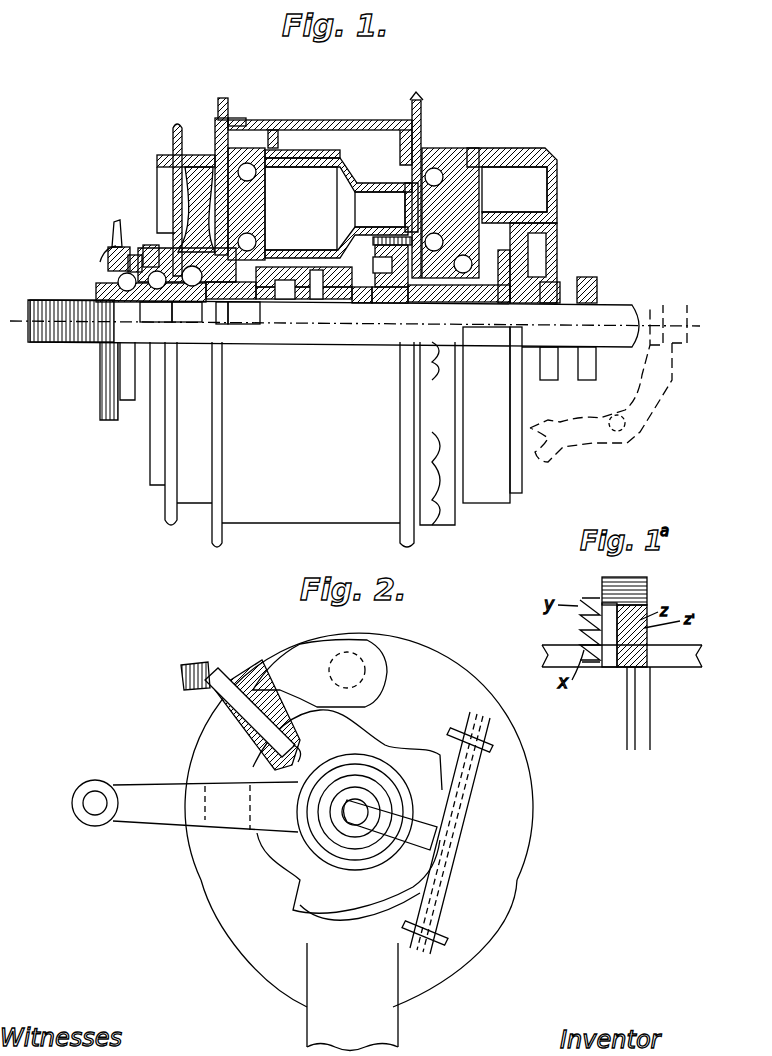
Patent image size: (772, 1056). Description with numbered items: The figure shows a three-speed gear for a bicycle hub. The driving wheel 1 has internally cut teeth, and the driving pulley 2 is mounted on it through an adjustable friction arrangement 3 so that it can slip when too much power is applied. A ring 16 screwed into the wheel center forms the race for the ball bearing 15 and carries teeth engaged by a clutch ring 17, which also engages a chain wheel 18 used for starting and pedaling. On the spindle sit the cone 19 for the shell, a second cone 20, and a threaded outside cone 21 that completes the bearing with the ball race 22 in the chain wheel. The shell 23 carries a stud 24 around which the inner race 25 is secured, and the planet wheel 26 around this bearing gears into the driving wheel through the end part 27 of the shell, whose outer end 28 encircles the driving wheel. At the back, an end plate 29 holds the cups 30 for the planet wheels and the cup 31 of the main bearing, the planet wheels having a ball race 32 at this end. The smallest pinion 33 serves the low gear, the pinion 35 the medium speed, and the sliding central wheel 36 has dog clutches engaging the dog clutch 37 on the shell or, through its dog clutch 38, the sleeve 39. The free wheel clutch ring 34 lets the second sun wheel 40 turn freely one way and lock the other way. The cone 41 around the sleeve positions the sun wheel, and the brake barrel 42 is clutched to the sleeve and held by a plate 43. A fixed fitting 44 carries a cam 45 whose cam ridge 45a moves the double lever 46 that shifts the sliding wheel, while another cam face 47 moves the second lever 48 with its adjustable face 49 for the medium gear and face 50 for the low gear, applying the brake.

In FIG. 1, the driving wheel 1 is at (236, 122).
In FIG. 1, the driving pulley 2 is at (173, 138).
In FIG. 1, the adjustable friction arrangement 3 is at (196, 175).
In FIG. 1, the ball bearing 15 is at (148, 280).
In FIG. 1, the ring forming a ball race 16 is at (108, 250).
In FIG. 1, the clutch ring 17 is at (146, 246).
In FIG. 1, the chain wheel 18 is at (114, 222).
In FIG. 1, the cone 19 is at (187, 312).
In FIG. 1, the cone 20 is at (156, 312).
In FIG. 1, the outside cone 21 is at (98, 292).
In FIG. 1, the ball race 22 is at (110, 262).
In FIG. 1, the shell 23 is at (318, 122).
In FIG. 1, the cylindrical projection or stud 24 is at (270, 208).
In FIG. 1, the cone or inner race 25 is at (265, 180).
In FIG. 1, the planet wheel 26 is at (262, 152).
In FIG. 1, the end part of the shell 27 is at (274, 130).
In FIG. 1, the outer end of the shell 28 is at (218, 122).
In FIG. 1, the end plate 29 is at (462, 160).
In FIG. 1, the outer ball races or cups 30 is at (428, 152).
In FIG. 1, the cup of the main bearing 31 is at (512, 268).
In FIG. 1, the ball race 32 is at (470, 200).
In FIG. 1, the smallest pinion 33 is at (372, 182).
In FIG. 1, the free wheel clutch ring 34 is at (354, 322).
In FIG. 1a, the free wheel clutch ring 34 is at (610, 667).
In FIG. 1, the pinion for the medium speed 35 is at (330, 166).
In FIG. 1, the central wheel 36 is at (272, 322).
In FIG. 1, the dog clutch 37 is at (226, 322).
In FIG. 1, the dog clutch 38 is at (304, 322).
In FIG. 1, the sleeve 39 is at (380, 322).
In FIG. 1, the second sun wheel 40 is at (390, 322).
In FIG. 1a, the second sun wheel 40 is at (640, 610).
In FIG. 1, the cone 41 is at (462, 315).
In FIG. 1, the brake barrel 42 is at (500, 152).
In FIG. 1, the plate 43 is at (598, 286).
In FIG. 1, the fitting or frame 44 is at (548, 226).
In FIG. 1, the cam 45 is at (552, 270).
In FIG. 2, the cam ridge 45a is at (370, 905).
In FIG. 1, the double lever 46 is at (598, 450).
In FIG. 2, the double lever 46 is at (445, 874).
In FIG. 2, the cam face 47 is at (362, 722).
In FIG. 2, the second lever 48 is at (220, 764).
In FIG. 2, the adjustable face for the medium gear 49 is at (300, 745).
In FIG. 2, the face for the low gear 50 is at (300, 880).